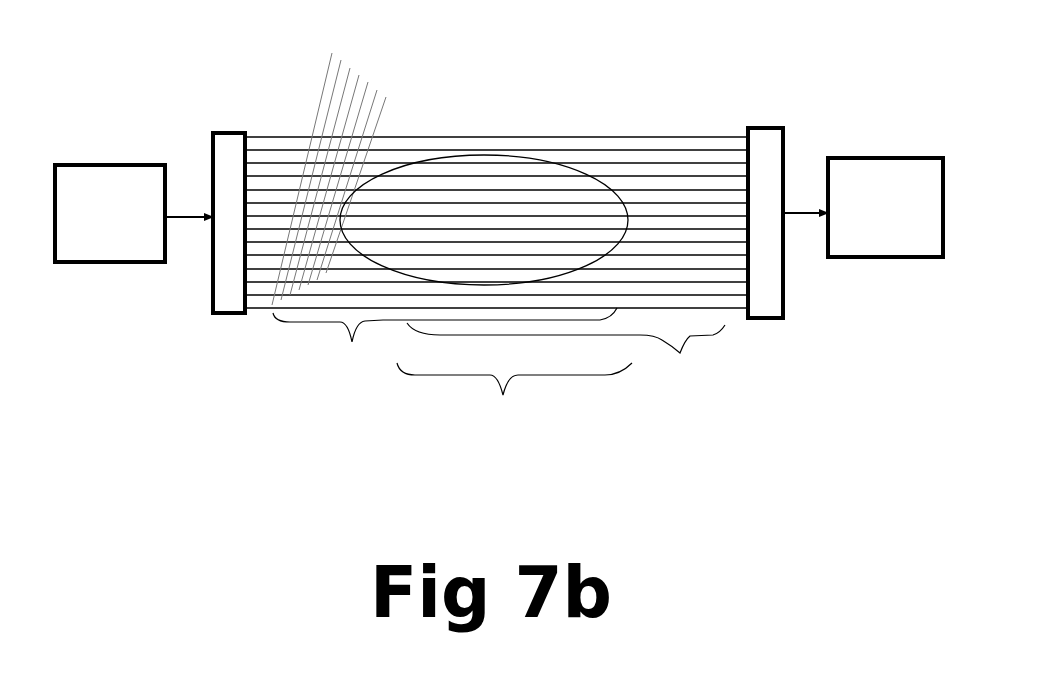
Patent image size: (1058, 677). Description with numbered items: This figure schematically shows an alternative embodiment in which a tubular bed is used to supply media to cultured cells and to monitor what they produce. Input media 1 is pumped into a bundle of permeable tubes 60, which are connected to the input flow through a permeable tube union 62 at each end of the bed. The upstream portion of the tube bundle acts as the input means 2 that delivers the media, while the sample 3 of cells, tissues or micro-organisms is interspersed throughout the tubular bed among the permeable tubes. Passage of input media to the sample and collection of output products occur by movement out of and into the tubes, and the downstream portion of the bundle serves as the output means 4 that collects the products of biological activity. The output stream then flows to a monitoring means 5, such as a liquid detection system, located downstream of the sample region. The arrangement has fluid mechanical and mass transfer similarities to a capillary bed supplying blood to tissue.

The input media 1 is at (109, 262).
The input means 2 is at (445, 354).
The sample 3 is at (486, 296).
The output means 4 is at (566, 364).
The monitoring means 5 is at (893, 257).
The permeable tubes 60 is at (337, 173).
The permeable tube union 62 is at (335, 131).